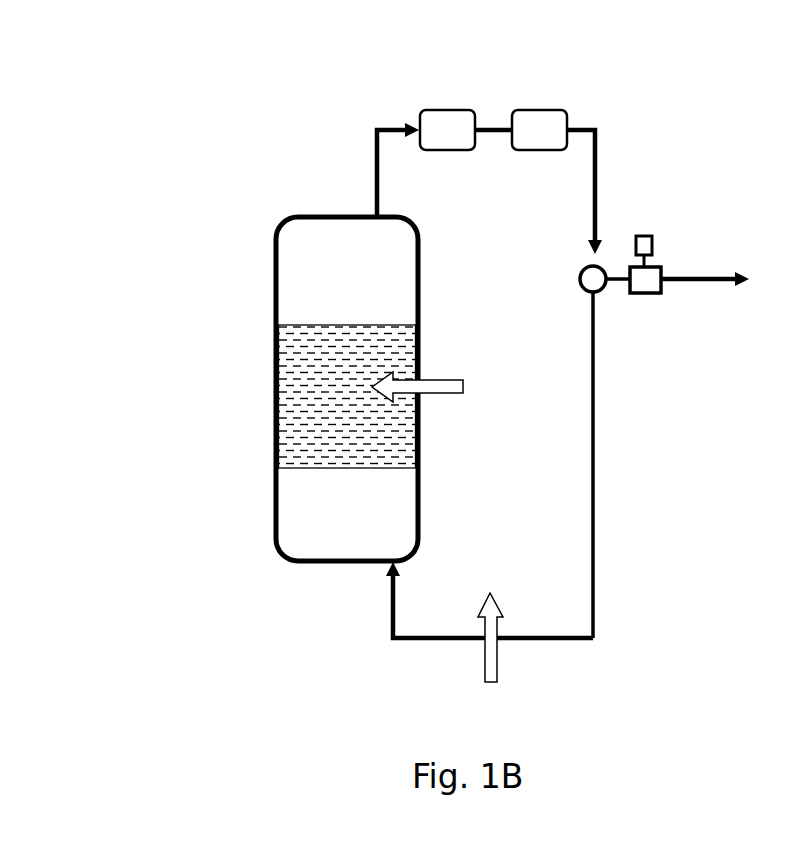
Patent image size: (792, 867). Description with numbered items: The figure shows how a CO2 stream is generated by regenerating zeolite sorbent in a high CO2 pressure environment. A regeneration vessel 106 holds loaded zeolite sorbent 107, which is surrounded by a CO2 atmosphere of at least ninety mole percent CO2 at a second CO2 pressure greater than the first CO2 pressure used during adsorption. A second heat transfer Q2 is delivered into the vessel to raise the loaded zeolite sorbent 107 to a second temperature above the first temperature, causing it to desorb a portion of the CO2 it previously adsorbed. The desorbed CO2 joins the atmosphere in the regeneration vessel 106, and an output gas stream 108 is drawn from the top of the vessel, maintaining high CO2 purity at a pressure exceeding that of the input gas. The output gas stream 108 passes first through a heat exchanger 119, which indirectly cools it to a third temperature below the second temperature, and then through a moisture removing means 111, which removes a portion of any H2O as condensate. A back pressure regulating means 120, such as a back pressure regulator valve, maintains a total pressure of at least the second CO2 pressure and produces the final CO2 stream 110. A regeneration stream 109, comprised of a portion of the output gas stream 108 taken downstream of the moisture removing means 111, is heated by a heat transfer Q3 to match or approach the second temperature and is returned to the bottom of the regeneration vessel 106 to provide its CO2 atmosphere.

The regeneration vessel 106 is at (276, 300).
The loaded zeolite sorbent 107 is at (298, 365).
The output gas stream 108 is at (374, 168).
The regeneration stream 109 is at (390, 600).
The final CO2 stream 110 is at (702, 282).
The moisture removing means 111 is at (543, 110).
The heat exchanger 119 is at (452, 110).
The back pressure regulating means 120 is at (650, 235).
The second heat transfer Q2 is at (436, 380).
The heat transfer Q3 is at (490, 660).